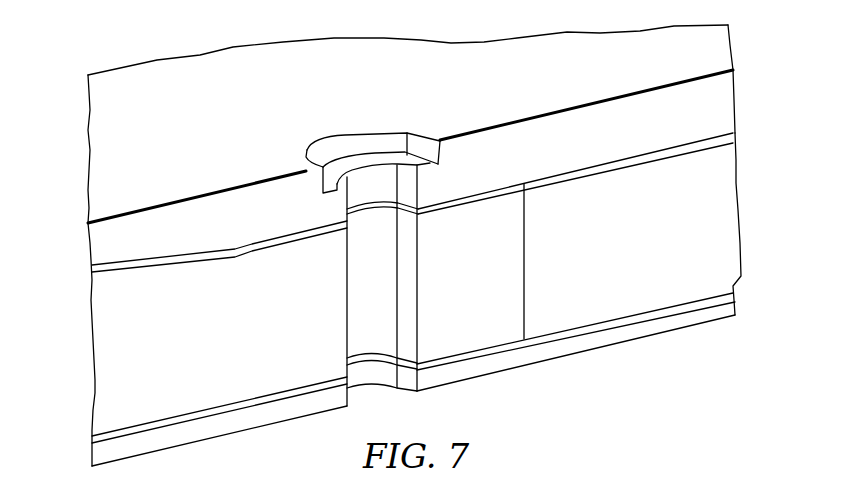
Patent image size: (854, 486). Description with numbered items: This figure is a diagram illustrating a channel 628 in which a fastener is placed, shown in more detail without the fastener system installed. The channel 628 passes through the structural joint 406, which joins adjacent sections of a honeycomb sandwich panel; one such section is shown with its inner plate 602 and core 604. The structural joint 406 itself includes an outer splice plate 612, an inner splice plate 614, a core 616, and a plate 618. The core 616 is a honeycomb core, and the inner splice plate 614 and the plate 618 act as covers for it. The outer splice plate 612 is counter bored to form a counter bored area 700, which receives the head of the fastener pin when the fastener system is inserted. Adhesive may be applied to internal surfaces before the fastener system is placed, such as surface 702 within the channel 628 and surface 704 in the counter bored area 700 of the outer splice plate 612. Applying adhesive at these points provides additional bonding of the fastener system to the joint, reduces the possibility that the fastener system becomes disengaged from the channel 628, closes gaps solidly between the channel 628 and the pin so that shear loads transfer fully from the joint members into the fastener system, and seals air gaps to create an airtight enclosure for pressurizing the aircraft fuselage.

The structural joint 406 is at (163, 74).
The outer splice plate 612 is at (197, 197).
The plate 618 is at (735, 137).
The core 616 is at (728, 183).
The core 604 is at (102, 333).
The inner plate 602 is at (90, 443).
The inner splice plate 614 is at (264, 428).
The channel 628 is at (405, 301).
The counter bored area 700 is at (374, 147).
The surface 704 is at (322, 141).
The surface 702 is at (369, 338).